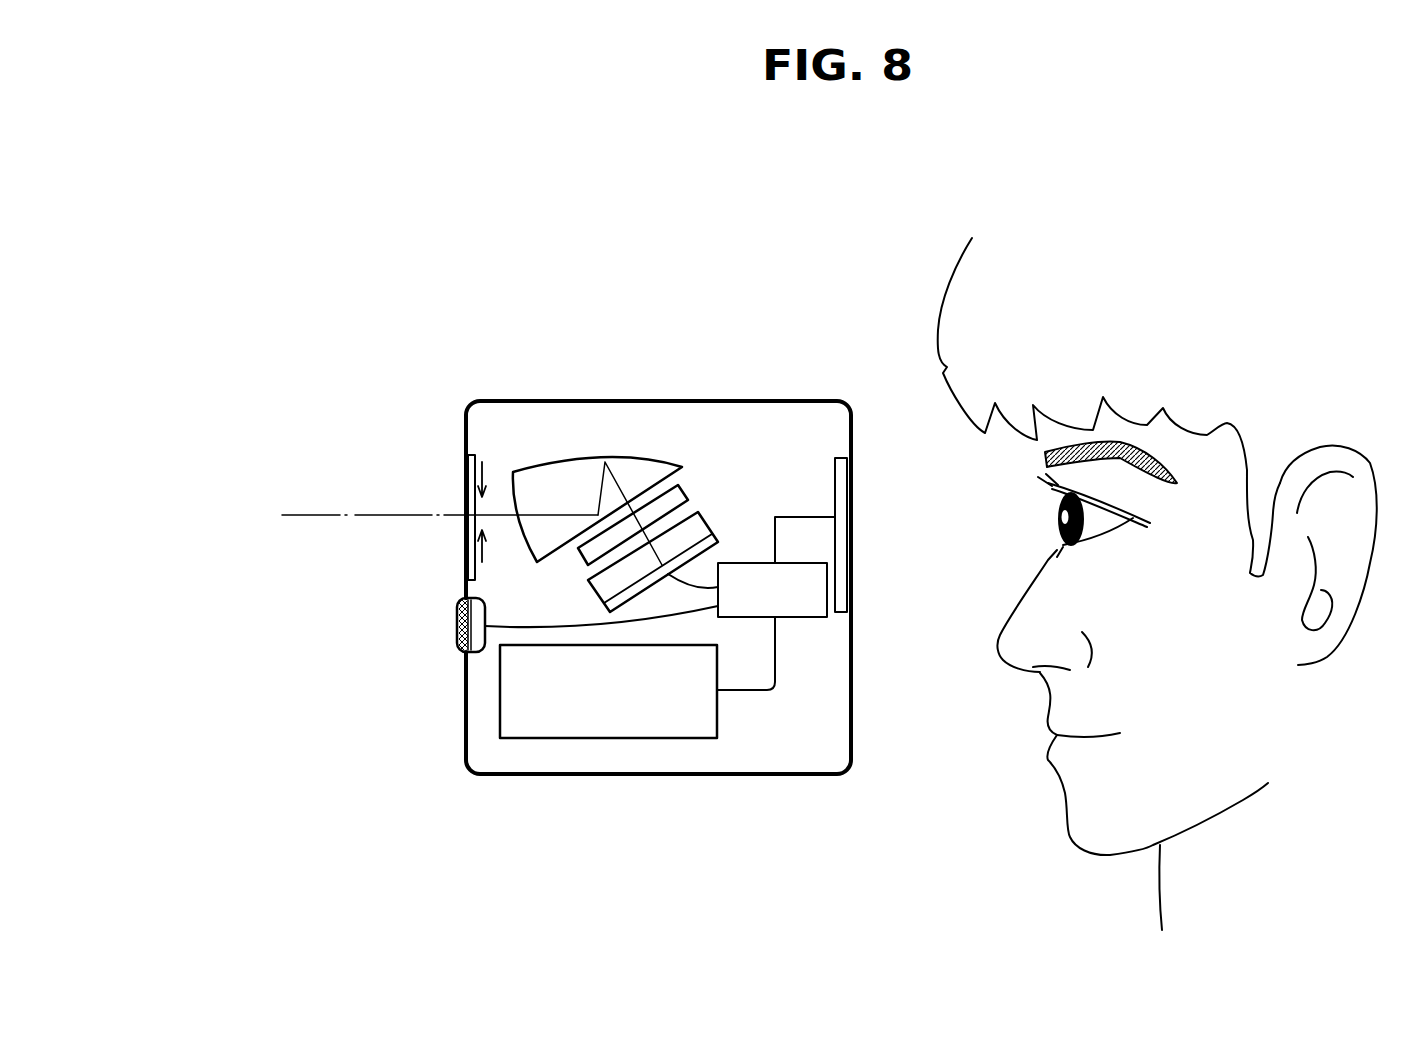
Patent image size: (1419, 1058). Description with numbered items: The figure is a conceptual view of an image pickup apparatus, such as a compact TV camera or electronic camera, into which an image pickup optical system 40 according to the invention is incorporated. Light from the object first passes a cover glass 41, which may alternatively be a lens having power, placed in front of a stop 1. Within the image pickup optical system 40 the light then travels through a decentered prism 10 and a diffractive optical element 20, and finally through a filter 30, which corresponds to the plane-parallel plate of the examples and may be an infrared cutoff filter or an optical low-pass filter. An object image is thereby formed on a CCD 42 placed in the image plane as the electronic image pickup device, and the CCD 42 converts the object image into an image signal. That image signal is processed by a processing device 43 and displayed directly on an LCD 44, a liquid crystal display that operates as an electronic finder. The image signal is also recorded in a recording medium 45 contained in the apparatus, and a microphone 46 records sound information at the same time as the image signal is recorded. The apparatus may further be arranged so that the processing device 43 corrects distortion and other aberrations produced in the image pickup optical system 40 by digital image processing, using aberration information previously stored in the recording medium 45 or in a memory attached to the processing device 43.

The image pickup optical system 40 is at (912, 198).
The cover glass 41 is at (465, 462).
The stop 1 is at (483, 463).
The decentered prism 10 is at (544, 477).
The diffractive optical element 20 is at (687, 496).
The filter 30 is at (702, 518).
The CCD 42 is at (718, 541).
The processing device 43 is at (805, 610).
The LCD 44 is at (848, 584).
The recording medium 45 is at (596, 740).
The microphone 46 is at (457, 633).